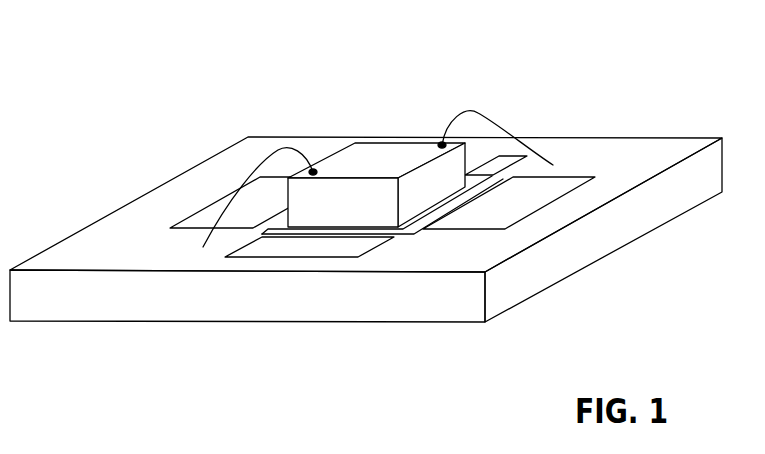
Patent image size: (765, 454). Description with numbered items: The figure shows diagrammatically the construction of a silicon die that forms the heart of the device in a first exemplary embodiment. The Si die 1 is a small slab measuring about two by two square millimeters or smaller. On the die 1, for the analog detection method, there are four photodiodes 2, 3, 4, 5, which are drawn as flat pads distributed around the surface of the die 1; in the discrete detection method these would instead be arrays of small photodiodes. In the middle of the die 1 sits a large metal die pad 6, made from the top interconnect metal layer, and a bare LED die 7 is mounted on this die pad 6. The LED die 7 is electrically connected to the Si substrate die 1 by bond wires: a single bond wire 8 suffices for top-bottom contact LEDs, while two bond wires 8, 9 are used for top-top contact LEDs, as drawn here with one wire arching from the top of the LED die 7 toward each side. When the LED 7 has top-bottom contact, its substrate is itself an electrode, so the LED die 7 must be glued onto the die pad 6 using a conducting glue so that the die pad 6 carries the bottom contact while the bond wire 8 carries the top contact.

The Si die 1 is at (347, 300).
The photodiode 2 is at (497, 160).
The photodiode 3 is at (558, 185).
The photodiode 4 is at (283, 250).
The photodiode 5 is at (200, 215).
The metal die pad 6 is at (405, 229).
The LED die 7 is at (357, 165).
The bond wire 8 is at (467, 110).
The bond wire 9 is at (267, 148).